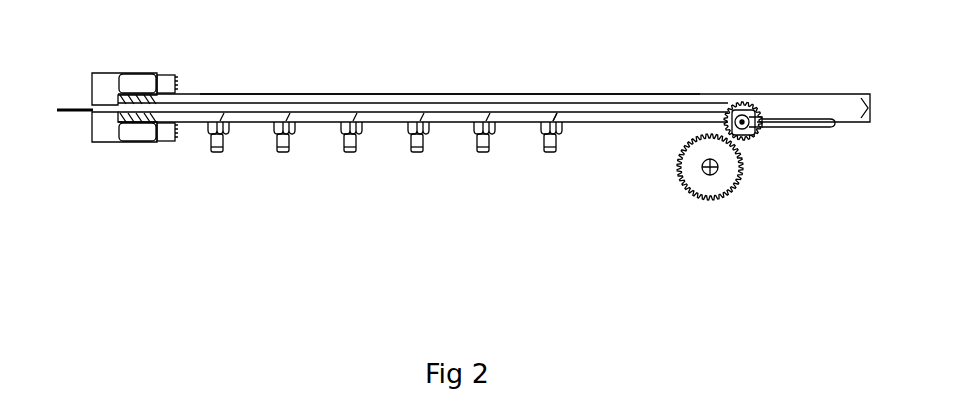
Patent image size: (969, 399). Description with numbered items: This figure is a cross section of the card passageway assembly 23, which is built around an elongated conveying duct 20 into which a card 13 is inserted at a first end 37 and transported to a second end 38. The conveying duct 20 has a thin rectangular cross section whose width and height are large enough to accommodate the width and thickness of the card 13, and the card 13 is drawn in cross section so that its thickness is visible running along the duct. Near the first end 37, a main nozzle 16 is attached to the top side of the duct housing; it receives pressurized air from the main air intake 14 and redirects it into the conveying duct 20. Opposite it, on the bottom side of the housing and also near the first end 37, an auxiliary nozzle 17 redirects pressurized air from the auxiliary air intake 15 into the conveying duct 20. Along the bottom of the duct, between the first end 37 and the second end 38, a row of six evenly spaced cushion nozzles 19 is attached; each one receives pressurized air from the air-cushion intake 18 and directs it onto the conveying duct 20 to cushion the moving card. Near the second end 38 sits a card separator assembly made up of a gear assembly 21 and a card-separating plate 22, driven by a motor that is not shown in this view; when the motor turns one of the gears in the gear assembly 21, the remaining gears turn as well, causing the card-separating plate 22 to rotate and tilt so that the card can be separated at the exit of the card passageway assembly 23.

The card 13 is at (67, 109).
The main air intake 14 is at (178, 74).
The auxiliary air intake 15 is at (176, 141).
The main nozzle 16 is at (128, 73).
The auxiliary nozzle 17 is at (103, 128).
The air-cushion intake 18 is at (418, 152).
The cushion nozzle 19 is at (565, 123).
The conveying duct 20 is at (505, 112).
The gear assembly 21 is at (690, 192).
The card-separating plate 22 is at (797, 127).
The card passageway assembly 23 is at (357, 93).
The first end 37 is at (148, 184).
The second end 38 is at (758, 220).